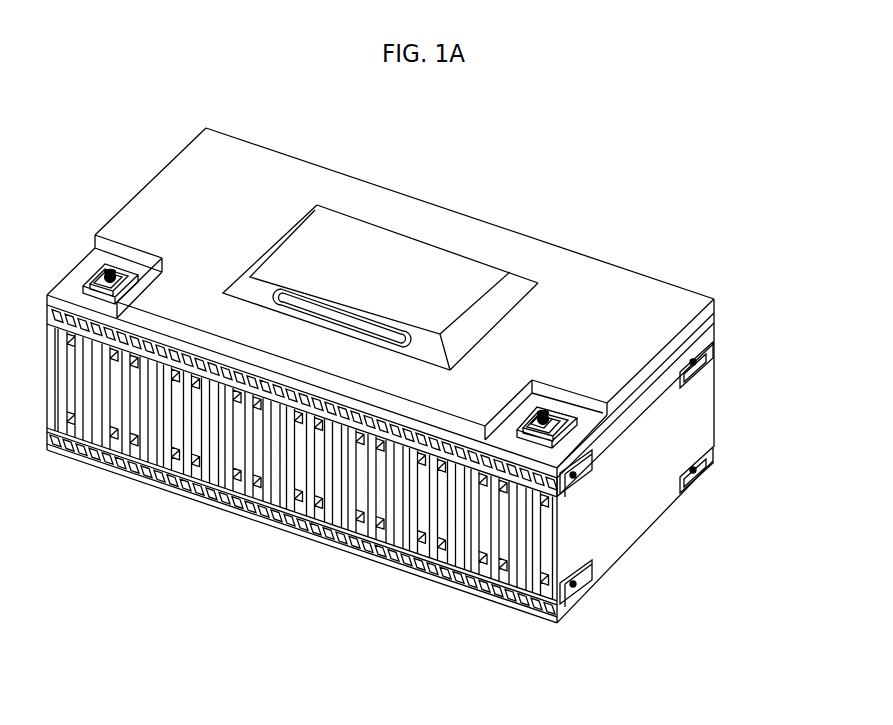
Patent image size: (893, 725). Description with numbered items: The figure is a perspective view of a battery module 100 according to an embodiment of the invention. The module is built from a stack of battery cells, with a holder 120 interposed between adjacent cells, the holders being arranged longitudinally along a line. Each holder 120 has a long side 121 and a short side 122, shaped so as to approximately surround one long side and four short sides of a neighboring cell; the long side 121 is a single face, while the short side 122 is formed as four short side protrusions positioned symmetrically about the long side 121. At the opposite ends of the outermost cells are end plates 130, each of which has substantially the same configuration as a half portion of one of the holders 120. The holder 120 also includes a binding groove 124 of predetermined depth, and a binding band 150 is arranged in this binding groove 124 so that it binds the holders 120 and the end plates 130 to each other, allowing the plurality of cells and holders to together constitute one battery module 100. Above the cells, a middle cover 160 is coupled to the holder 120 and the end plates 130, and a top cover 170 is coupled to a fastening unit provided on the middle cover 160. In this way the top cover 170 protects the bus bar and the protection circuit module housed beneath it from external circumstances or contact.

The battery module 100 is at (418, 393).
The holder 120 is at (302, 490).
The long side 121 is at (395, 500).
The short side 122 is at (400, 563).
The binding groove 124 is at (587, 478).
The end plate 130 is at (702, 399).
The binding band 150 is at (567, 482).
The middle cover 160 is at (580, 432).
The top cover 170 is at (597, 278).